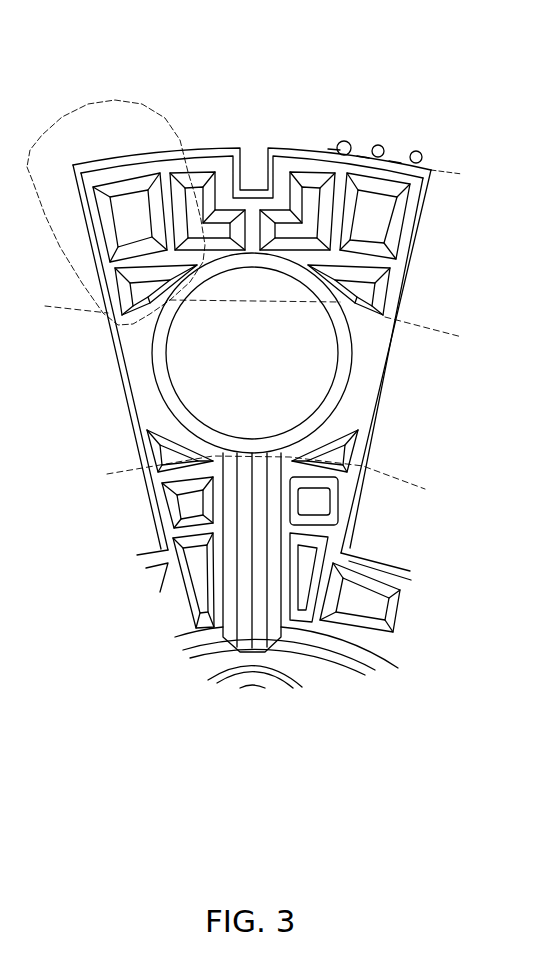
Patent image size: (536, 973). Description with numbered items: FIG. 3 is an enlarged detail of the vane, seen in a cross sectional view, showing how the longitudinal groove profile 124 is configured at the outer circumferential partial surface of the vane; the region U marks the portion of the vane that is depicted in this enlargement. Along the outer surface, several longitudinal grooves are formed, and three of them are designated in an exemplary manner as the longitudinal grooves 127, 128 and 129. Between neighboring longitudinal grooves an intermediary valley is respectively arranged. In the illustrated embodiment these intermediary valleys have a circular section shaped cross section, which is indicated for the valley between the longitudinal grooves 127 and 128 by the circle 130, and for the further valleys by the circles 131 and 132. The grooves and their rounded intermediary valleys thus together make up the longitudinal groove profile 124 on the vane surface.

The rotor unit U is at (143, 103).
The longitudinal groove profile 124 is at (194, 146).
The longitudinal groove 127 is at (395, 163).
The longitudinal groove 128 is at (363, 157).
The longitudinal groove 129 is at (334, 150).
The circle 130 is at (344, 141).
The circle 131 is at (381, 145).
The circle 132 is at (421, 151).